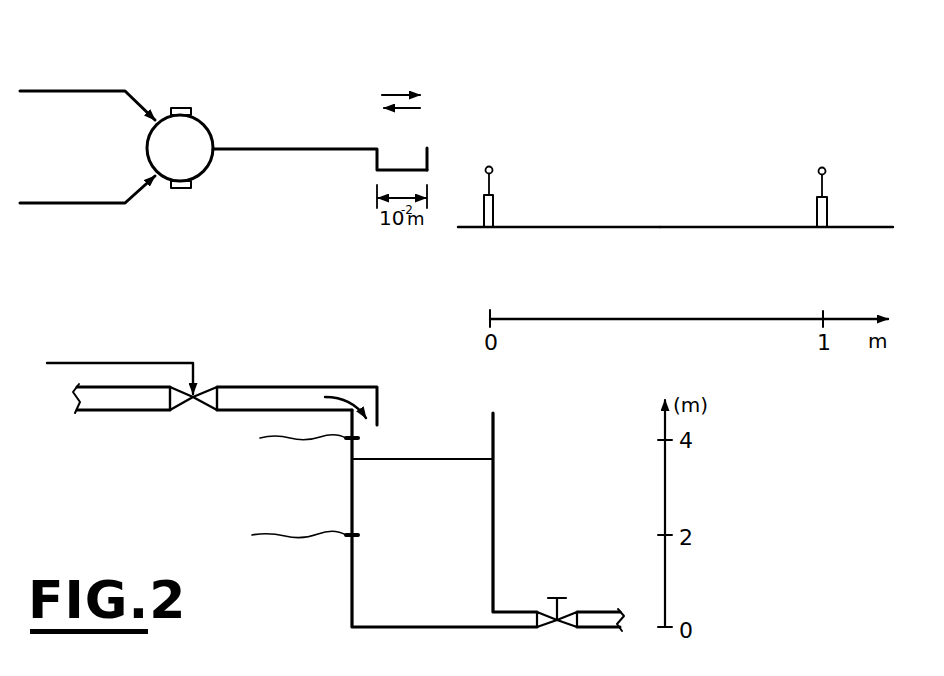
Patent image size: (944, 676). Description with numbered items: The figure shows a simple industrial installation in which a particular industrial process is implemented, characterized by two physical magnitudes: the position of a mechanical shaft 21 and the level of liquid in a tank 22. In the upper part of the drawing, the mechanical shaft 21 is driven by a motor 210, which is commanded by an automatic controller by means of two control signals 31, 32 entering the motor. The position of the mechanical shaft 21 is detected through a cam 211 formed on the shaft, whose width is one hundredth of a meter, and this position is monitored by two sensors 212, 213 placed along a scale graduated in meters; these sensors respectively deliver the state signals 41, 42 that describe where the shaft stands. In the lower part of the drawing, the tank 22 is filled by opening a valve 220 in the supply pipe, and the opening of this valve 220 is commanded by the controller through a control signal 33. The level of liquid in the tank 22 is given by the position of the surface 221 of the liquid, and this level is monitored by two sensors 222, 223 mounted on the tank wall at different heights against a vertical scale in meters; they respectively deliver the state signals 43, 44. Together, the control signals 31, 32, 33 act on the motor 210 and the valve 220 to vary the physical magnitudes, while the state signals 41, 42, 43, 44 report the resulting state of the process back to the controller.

The mechanical shaft 21 is at (275, 152).
The tank 22 is at (361, 631).
The control signal 31 is at (60, 88).
The control signal 32 is at (60, 200).
The control signal 33 is at (88, 360).
The state signal 41 is at (489, 229).
The state signal 42 is at (822, 229).
The state signal 43 is at (288, 541).
The state signal 44 is at (297, 443).
The motor 210 is at (214, 126).
The cam 211 is at (431, 157).
The sensor 212 is at (497, 210).
The sensor 213 is at (814, 210).
The valve 220 is at (183, 412).
The surface of the liquid 221 is at (459, 455).
The sensor 222 is at (361, 540).
The sensor 223 is at (360, 440).